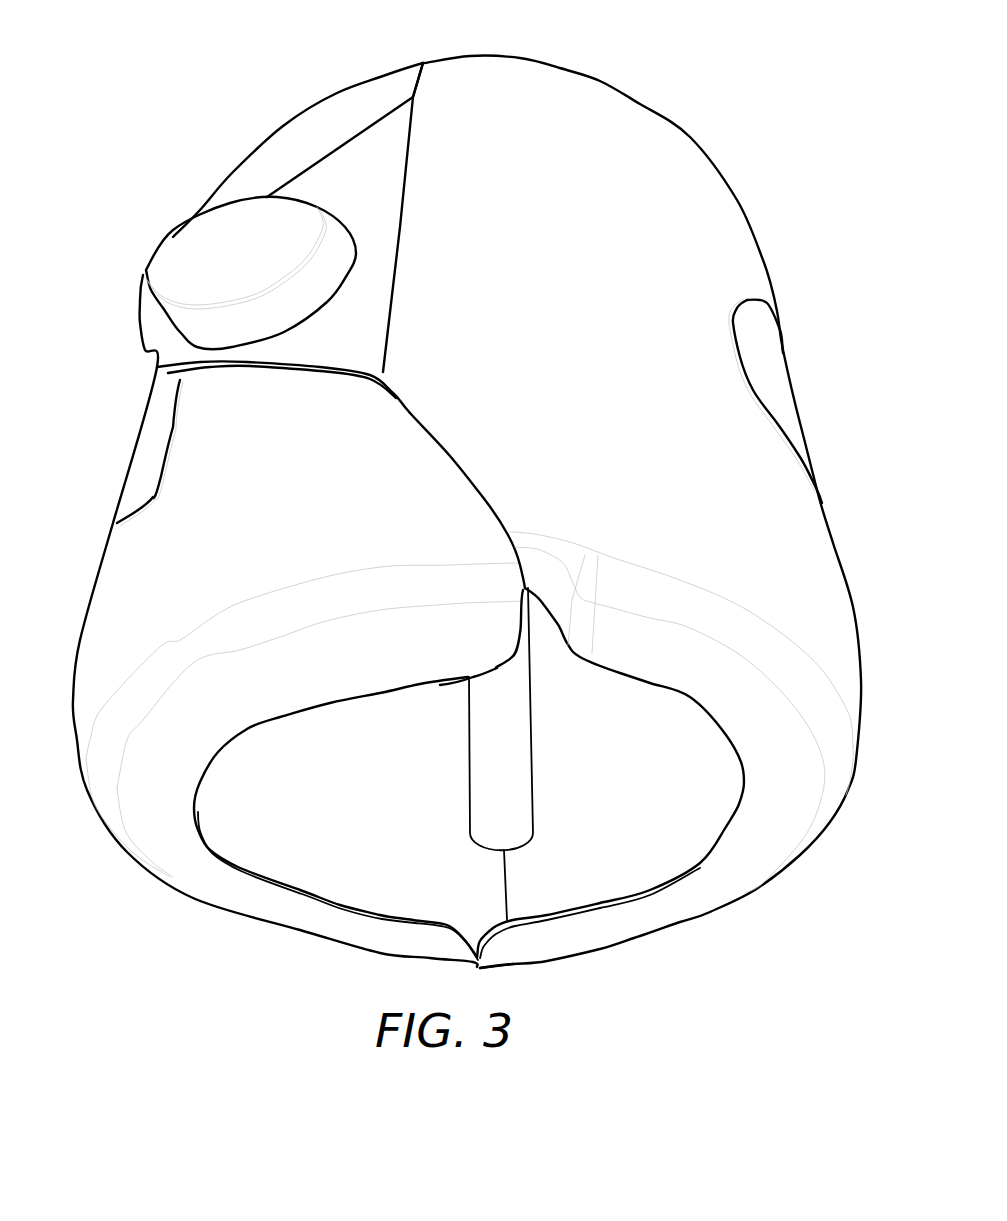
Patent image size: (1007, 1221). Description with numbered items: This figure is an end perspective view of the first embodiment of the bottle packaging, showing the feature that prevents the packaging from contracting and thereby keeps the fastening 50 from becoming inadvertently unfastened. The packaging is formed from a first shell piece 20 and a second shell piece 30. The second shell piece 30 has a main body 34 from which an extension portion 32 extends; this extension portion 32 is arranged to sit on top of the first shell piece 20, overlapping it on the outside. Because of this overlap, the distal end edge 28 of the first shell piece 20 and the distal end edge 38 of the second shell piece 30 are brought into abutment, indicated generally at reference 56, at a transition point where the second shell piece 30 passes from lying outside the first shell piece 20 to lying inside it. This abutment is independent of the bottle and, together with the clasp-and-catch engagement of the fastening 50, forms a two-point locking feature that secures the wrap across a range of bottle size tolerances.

The first shell piece 20 is at (733, 214).
The distal end edge of the first shell piece 28 is at (264, 374).
The second shell piece 30 is at (187, 450).
The extension portion 32 is at (445, 525).
The main body of the second shell piece 34 is at (140, 573).
The distal end edge of the second shell piece 38 is at (500, 515).
The fastening 50 is at (178, 247).
The abutment of the distal end edges 56 is at (420, 413).